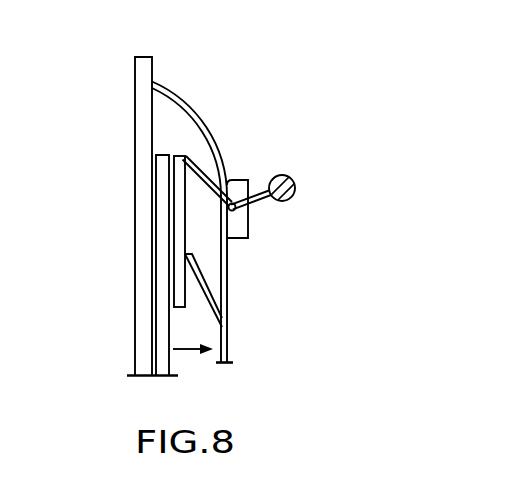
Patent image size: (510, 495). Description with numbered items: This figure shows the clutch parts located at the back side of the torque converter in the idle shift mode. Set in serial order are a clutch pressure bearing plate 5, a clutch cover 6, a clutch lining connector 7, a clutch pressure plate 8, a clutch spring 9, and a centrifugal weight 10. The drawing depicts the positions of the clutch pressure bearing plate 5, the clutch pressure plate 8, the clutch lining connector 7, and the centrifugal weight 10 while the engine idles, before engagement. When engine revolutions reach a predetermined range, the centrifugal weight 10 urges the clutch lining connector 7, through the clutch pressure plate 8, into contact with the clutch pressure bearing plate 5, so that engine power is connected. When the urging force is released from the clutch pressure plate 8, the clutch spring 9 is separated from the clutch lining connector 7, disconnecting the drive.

The clutch pressure bearing plate 5 is at (137, 70).
The clutch cover 6 is at (225, 128).
The clutch lining connector 7 is at (162, 157).
The clutch pressure plate 8 is at (180, 157).
The clutch spring 9 is at (206, 290).
The centrifugal weight 10 is at (297, 183).